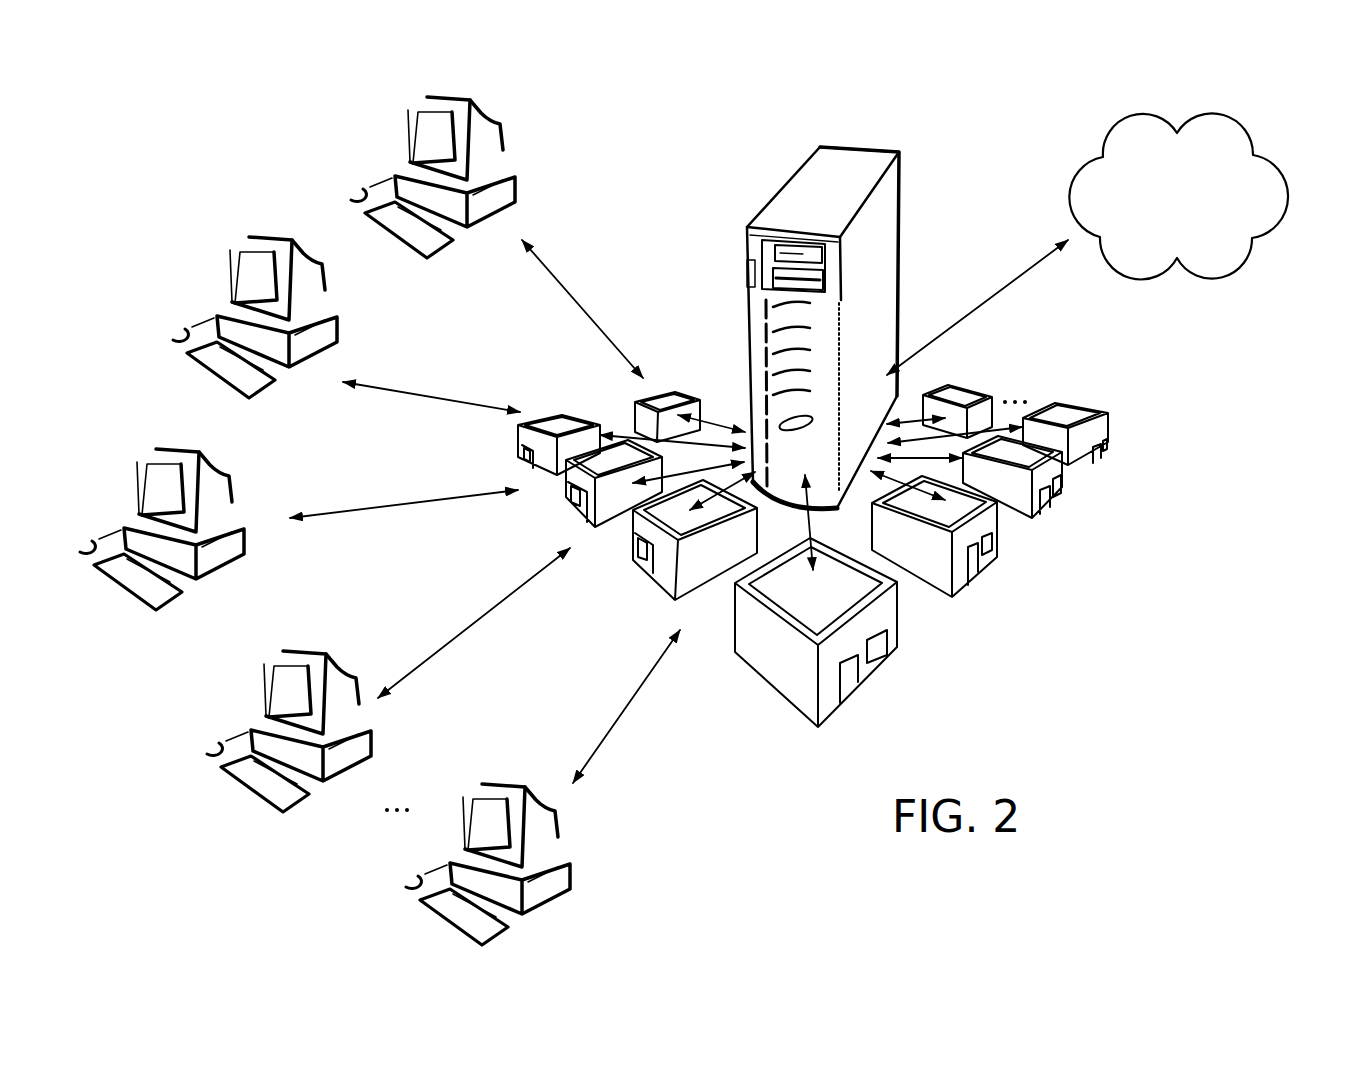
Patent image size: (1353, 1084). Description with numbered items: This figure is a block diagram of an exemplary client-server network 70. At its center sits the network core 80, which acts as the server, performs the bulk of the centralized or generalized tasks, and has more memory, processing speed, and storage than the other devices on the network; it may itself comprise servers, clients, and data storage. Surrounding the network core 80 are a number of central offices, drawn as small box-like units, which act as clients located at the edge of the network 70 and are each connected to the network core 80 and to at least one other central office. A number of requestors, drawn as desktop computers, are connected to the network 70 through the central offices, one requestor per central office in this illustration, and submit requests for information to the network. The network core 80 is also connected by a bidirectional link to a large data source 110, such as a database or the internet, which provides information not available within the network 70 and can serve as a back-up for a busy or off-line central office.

The client-server network 70 is at (848, 158).
The network core 80 is at (840, 340).
The large data source 110 is at (1255, 155).